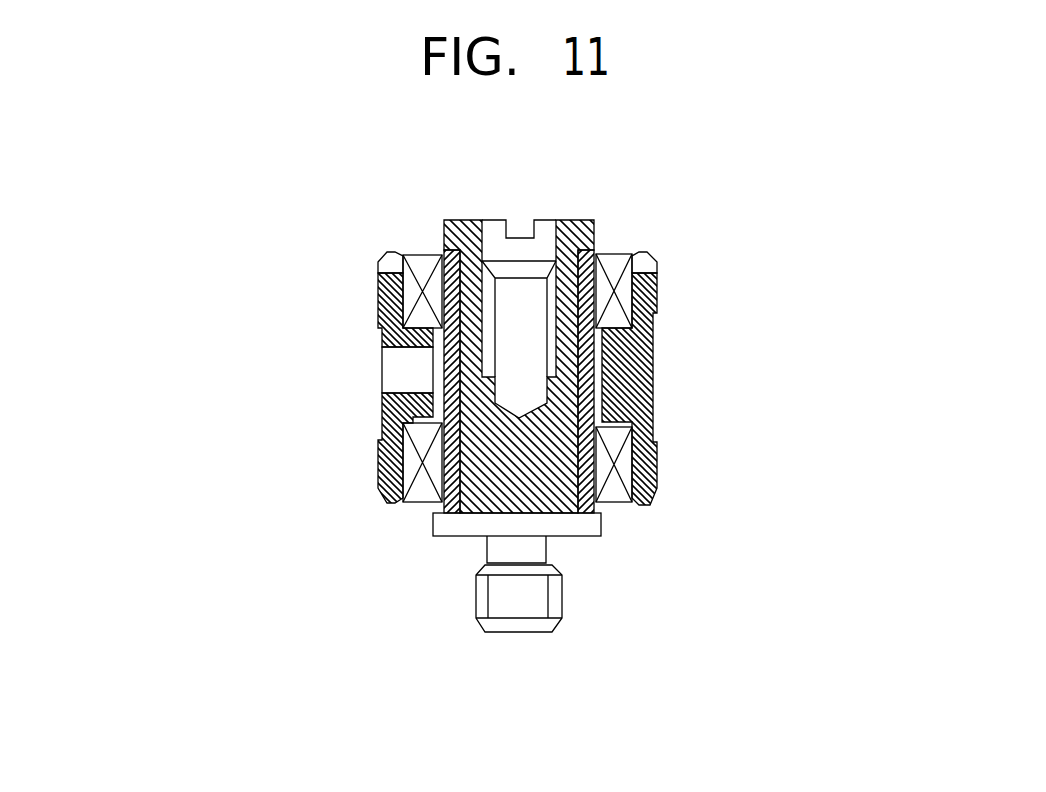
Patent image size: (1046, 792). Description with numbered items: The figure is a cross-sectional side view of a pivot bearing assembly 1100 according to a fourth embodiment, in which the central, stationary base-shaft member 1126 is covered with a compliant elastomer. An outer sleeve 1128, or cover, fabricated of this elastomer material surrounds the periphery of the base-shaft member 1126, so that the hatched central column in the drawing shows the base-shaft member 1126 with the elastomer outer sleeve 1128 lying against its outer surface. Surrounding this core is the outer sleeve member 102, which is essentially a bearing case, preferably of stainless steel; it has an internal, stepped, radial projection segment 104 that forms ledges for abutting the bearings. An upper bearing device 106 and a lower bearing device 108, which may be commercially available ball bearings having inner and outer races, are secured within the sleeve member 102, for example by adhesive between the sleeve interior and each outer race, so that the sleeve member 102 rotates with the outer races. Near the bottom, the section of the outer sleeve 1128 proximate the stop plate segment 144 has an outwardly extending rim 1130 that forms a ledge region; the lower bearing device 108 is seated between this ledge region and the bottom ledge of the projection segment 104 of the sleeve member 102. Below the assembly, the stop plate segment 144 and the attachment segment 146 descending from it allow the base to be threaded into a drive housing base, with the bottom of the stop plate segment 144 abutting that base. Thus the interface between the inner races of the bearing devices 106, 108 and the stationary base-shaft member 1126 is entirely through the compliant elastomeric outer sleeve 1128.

The pivot bearing assembly 1100 is at (277, 242).
The upper bearing device 106 is at (420, 262).
The base-shaft member 1126 is at (599, 221).
The outer sleeve 1128 is at (583, 355).
The outer sleeve member 102 is at (638, 383).
The lower bearing device 108 is at (623, 480).
The projection segment 104 is at (420, 427).
The stop plate segment 144 is at (447, 527).
The attachment segment 146 is at (488, 602).
The rim 1130 is at (607, 508).